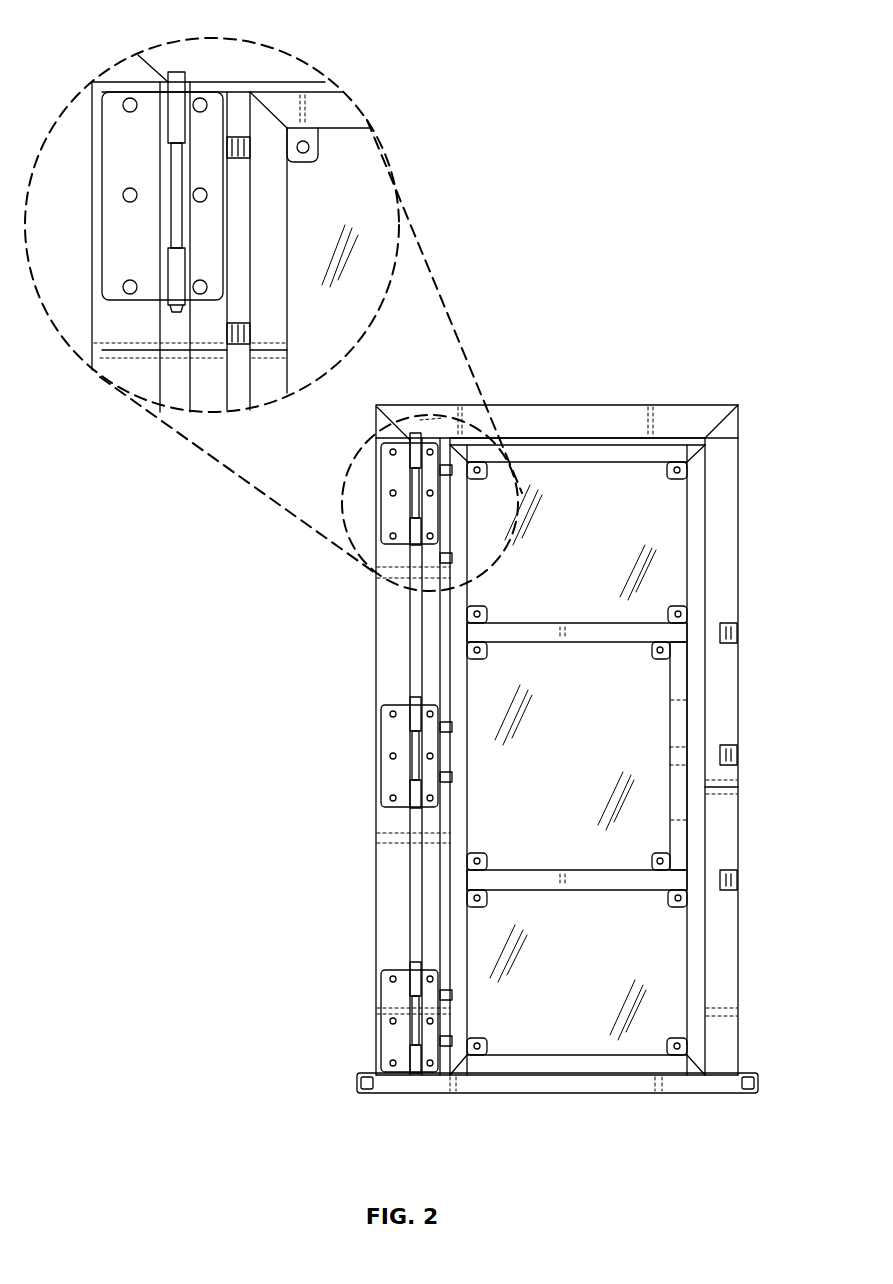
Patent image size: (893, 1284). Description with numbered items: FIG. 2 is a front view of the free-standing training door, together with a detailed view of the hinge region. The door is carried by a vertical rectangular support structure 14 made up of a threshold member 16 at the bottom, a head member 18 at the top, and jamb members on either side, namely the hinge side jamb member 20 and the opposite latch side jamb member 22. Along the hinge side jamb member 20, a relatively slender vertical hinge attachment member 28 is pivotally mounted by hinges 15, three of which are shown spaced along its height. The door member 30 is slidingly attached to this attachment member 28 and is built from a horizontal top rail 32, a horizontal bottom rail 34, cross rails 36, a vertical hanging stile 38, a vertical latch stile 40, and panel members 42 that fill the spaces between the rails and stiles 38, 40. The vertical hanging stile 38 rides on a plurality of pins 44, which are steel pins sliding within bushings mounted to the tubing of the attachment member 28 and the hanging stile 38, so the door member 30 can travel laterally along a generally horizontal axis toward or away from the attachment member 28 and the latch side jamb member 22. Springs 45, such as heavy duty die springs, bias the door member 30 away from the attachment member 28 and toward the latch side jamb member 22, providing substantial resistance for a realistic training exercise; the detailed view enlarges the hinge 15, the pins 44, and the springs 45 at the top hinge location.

The vertical rectangular support structure 14 is at (748, 756).
The hinges 15 is at (118, 105).
The threshold member 16 is at (540, 1085).
The head member 18 is at (588, 422).
The hinge side jamb member 20 is at (375, 882).
The latch side jamb member 22 is at (740, 845).
The vertical hinge attachment member 28 is at (430, 672).
The door member 30 is at (646, 484).
The horizontal top rail 32 is at (538, 450).
The horizontal bottom rail 34 is at (622, 1063).
The cross rails 36 is at (633, 632).
The vertical hanging stile 38 is at (460, 643).
The vertical latch stile 40 is at (713, 540).
The panel members 42 is at (553, 558).
The pins 44 is at (237, 137).
The springs 45 is at (237, 345).